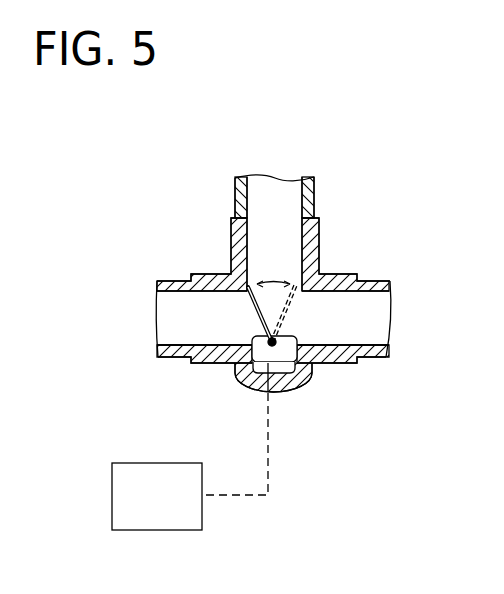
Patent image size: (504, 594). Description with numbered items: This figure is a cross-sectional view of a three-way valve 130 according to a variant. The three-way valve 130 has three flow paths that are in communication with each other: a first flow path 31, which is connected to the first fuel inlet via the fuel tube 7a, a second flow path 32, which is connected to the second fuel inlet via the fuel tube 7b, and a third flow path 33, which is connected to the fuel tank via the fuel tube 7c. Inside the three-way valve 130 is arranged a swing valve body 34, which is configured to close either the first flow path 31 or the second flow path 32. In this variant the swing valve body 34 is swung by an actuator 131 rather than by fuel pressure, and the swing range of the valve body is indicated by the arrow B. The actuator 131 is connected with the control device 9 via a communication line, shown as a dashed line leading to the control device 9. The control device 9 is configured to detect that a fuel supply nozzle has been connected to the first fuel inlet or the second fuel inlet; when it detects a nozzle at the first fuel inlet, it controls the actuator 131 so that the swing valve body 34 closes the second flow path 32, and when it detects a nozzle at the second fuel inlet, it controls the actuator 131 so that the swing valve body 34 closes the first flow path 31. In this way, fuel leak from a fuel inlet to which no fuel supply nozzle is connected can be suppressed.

The fuel tube 7a is at (165, 362).
The fuel tube 7b is at (384, 281).
The fuel tube 7c is at (315, 186).
The first flow path 31 is at (203, 345).
The second flow path 32 is at (347, 292).
The third flow path 33 is at (302, 223).
The swing valve body 34 is at (258, 308).
The three-way valve 130 is at (230, 245).
The actuator 131 is at (287, 362).
The swing range of detection element B is at (274, 281).
The control device 9 is at (112, 473).